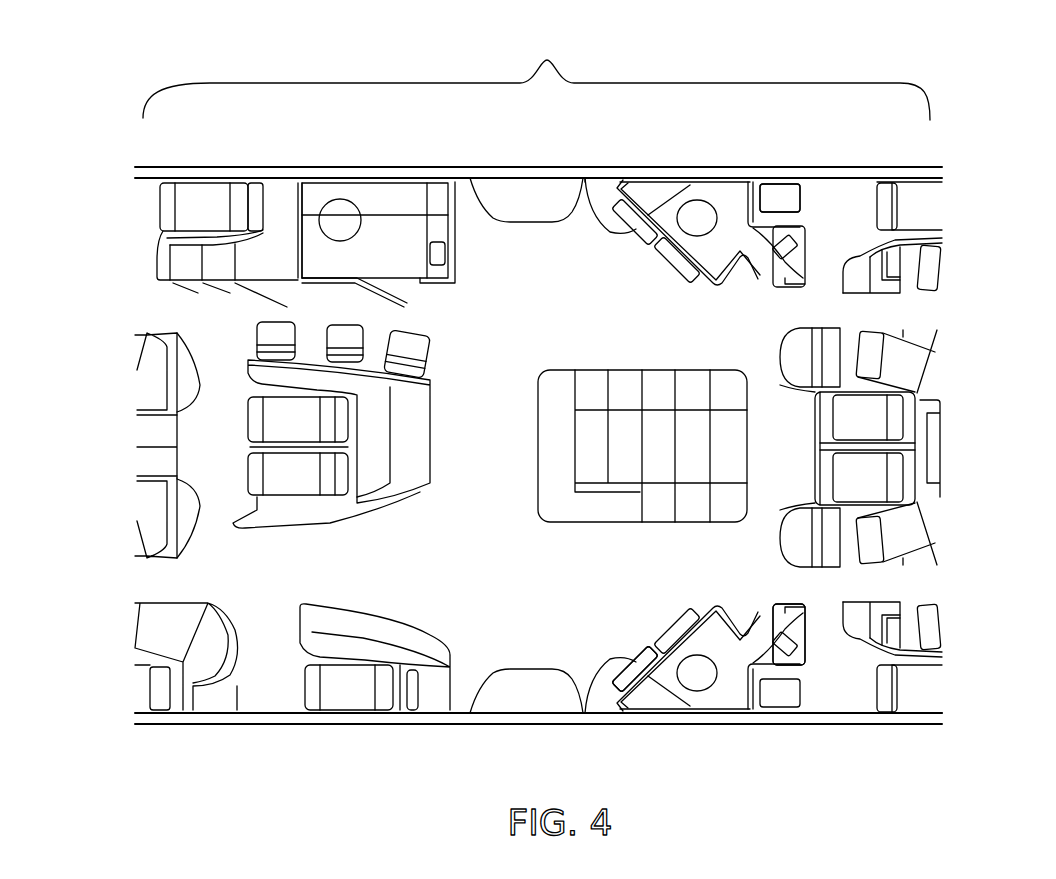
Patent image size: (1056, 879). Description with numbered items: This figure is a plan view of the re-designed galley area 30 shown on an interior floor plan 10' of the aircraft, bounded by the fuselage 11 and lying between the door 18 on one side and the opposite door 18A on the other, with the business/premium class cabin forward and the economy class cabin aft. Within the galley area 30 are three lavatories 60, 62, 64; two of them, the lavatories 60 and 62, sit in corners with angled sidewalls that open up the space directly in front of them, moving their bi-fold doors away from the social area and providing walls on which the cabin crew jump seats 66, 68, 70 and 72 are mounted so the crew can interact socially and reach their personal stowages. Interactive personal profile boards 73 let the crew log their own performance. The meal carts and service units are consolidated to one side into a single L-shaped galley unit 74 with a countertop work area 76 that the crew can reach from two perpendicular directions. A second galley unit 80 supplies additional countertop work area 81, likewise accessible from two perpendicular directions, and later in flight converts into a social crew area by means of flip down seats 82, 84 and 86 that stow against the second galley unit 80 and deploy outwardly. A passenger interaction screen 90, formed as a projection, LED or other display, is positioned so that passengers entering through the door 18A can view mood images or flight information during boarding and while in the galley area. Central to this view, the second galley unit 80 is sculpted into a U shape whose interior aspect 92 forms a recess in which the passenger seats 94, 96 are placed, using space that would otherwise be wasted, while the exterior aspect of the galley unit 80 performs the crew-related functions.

The interior floor plan 10' is at (225, 40).
The fuselage 11 is at (147, 167).
The galley area 30 is at (536, 75).
The door 18 is at (538, 210).
The door 18A is at (513, 703).
The lavatory 60 is at (735, 217).
The lavatory 62 is at (413, 343).
The lavatory 64 is at (740, 648).
The cabin crew jump seat 66 is at (690, 218).
The cabin crew jump seat 68 is at (585, 167).
The cabin crew jump seat 70 is at (630, 673).
The cabin crew jump seat 72 is at (673, 623).
The interactive personal profile board 73 is at (630, 490).
The L-shaped galley unit 74 is at (713, 433).
The countertop work area 76 is at (598, 508).
The second galley unit 80 is at (363, 465).
The countertop work area 81 is at (417, 447).
The flip down seat 82 is at (267, 333).
The flip down seat 84 is at (343, 330).
The flip down seat 86 is at (416, 335).
The passenger interaction screen 90 is at (307, 487).
The interior aspect 92 is at (310, 487).
The passenger seat 94 is at (283, 473).
The passenger seat 96 is at (290, 418).